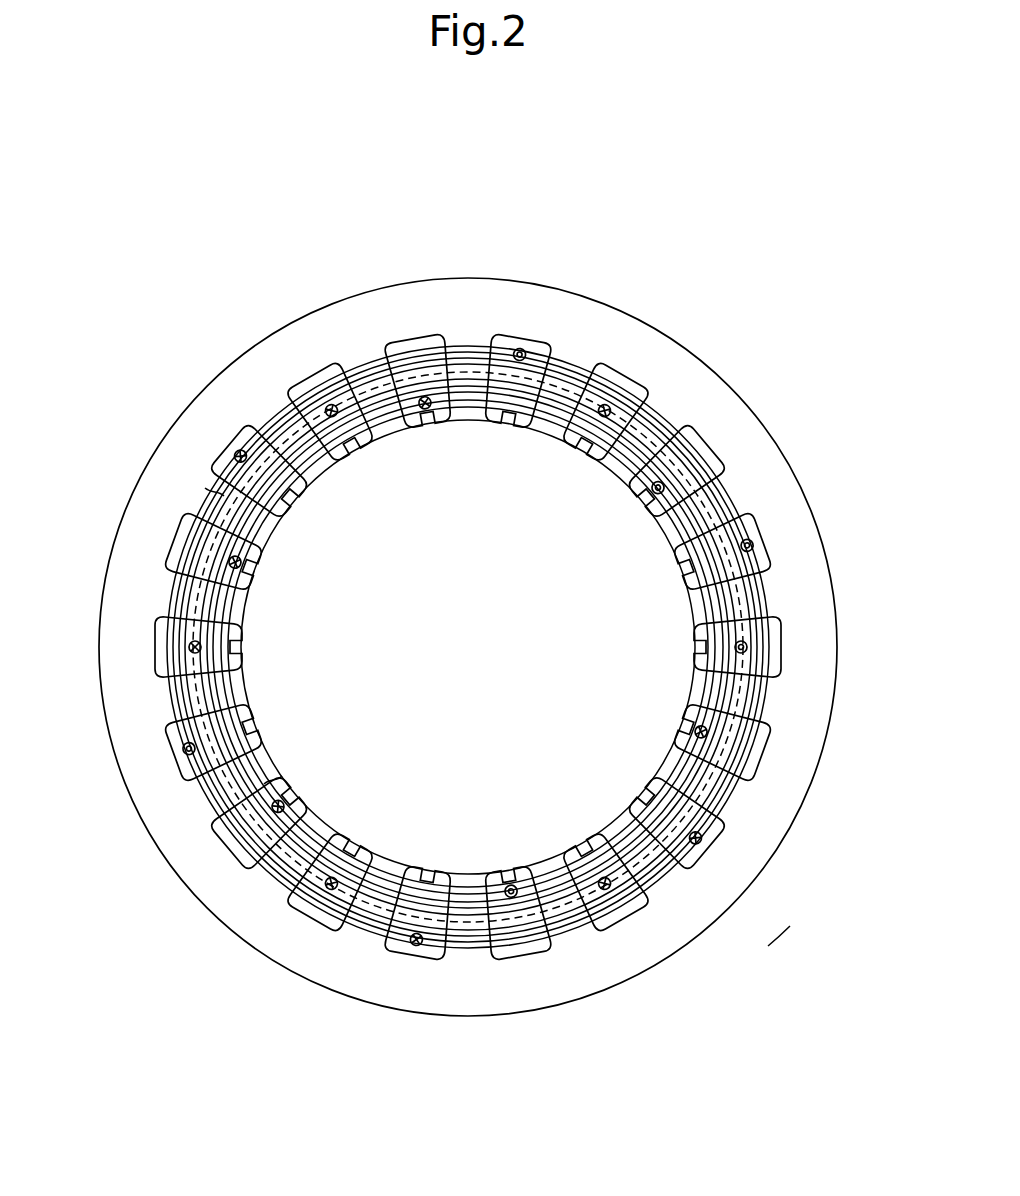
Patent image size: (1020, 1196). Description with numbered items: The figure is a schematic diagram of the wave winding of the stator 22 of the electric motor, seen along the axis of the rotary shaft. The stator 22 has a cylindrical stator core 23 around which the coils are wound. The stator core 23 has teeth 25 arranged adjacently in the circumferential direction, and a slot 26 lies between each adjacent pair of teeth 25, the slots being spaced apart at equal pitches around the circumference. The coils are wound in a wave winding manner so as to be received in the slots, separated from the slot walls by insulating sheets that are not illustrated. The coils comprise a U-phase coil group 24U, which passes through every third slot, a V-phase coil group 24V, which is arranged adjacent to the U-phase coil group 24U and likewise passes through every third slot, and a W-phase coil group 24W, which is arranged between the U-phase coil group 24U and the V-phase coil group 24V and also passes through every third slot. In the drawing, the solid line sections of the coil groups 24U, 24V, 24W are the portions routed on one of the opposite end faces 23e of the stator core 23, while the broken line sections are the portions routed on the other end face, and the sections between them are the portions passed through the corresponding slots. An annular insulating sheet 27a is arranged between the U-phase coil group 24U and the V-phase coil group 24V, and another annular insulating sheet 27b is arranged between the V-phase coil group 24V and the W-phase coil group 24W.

The stator 22 is at (692, 258).
The stator core 23 is at (812, 699).
The end face 23e is at (733, 894).
The U-phase coil group 24U is at (456, 348).
The V-phase coil group 24V is at (292, 421).
The W-phase coil group 24W is at (596, 448).
The teeth 25 is at (396, 436).
The slot 26 is at (410, 340).
The annular insulating sheet 27a is at (205, 488).
The annular insulating sheet 27b is at (282, 776).